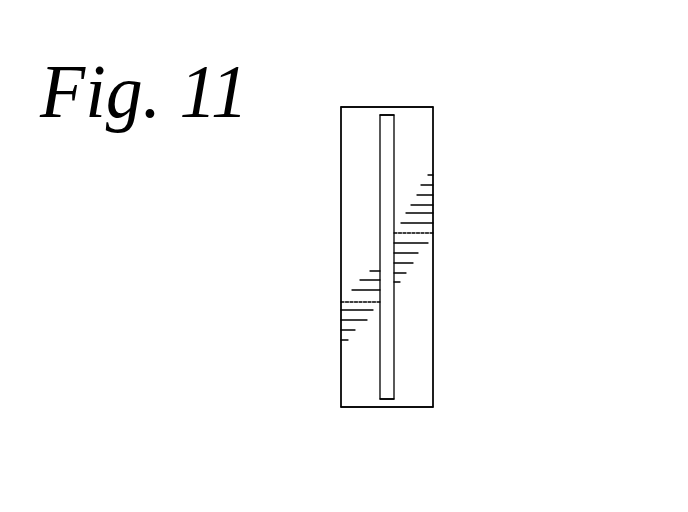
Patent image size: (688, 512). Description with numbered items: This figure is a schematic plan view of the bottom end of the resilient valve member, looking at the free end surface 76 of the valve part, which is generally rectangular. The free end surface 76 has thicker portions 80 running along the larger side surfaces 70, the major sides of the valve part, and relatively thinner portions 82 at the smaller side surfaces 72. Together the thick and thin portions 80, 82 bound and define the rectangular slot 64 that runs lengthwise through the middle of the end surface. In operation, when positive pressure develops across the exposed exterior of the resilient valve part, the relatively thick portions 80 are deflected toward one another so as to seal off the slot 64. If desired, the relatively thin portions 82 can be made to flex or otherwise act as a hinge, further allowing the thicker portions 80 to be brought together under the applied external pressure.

The rectangular slot 64 is at (390, 154).
The larger side surfaces 70 is at (340, 213).
The smaller side surfaces 72 is at (363, 107).
The free end surface 76 is at (427, 107).
The thicker portions 80 is at (356, 247).
The thinner portions 82 is at (390, 115).